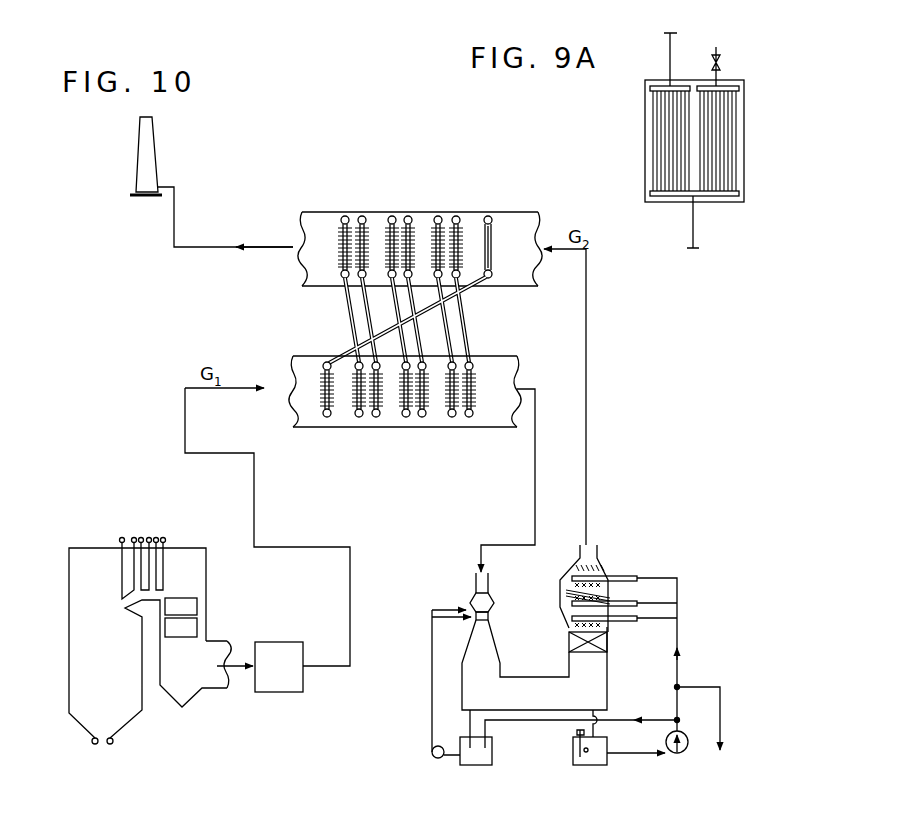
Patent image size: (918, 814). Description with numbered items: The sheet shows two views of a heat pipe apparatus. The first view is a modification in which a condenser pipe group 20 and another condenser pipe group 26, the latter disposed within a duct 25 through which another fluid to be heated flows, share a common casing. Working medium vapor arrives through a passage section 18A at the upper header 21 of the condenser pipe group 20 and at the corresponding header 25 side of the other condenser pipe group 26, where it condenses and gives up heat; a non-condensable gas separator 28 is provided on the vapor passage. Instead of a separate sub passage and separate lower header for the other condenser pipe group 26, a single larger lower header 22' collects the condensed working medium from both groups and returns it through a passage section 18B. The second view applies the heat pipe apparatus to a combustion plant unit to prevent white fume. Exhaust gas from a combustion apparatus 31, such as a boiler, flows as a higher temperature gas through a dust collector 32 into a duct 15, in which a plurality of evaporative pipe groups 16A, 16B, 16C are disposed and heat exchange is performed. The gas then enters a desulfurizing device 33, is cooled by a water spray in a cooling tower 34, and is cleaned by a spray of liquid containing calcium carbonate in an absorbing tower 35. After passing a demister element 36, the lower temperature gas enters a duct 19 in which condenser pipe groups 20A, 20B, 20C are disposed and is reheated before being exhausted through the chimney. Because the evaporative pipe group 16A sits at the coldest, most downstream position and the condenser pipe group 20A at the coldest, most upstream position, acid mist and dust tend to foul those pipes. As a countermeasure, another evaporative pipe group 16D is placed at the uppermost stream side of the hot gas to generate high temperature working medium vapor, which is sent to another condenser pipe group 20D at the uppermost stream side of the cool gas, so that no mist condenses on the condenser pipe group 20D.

In FIG. 10, the duct 15 is at (296, 428).
In FIG. 10, the evaporative pipe group 16A is at (470, 417).
In FIG. 10, the evaporative pipe group 16B is at (422, 417).
In FIG. 10, the evaporative pipe group 16C is at (359, 417).
In FIG. 10, the evaporative pipe group 16D is at (327, 417).
In FIG. 10, the duct 19 is at (302, 212).
In FIG. 10, the condenser pipe group 20A is at (456, 216).
In FIG. 10, the condenser pipe group 20B is at (408, 215).
In FIG. 10, the condenser pipe group 20C is at (362, 216).
In FIG. 10, the condenser pipe group 20D is at (489, 215).
In FIG. 10, the combustion apparatus 31 is at (70, 659).
In FIG. 10, the dust collector 32 is at (282, 692).
In FIG. 10, the desulfurizing device 33 is at (472, 598).
In FIG. 10, the cooling tower 34 is at (497, 631).
In FIG. 10, the absorbing tower 35 is at (607, 666).
In FIG. 10, the demister element 36 is at (136, 151).
In FIG. 9A, the passage section 18A is at (672, 74).
In FIG. 9A, the passage section 18B is at (693, 235).
In FIG. 9A, the condenser pipe group 20 is at (657, 124).
In FIG. 9A, the upper header 21 is at (654, 88).
In FIG. 9A, the larger lower header 22' is at (726, 201).
In FIG. 9A, the duct 25 is at (737, 86).
In FIG. 9A, the condenser pipe group 26 is at (728, 120).
In FIG. 9A, the non-condensable gas separator 28 is at (716, 48).